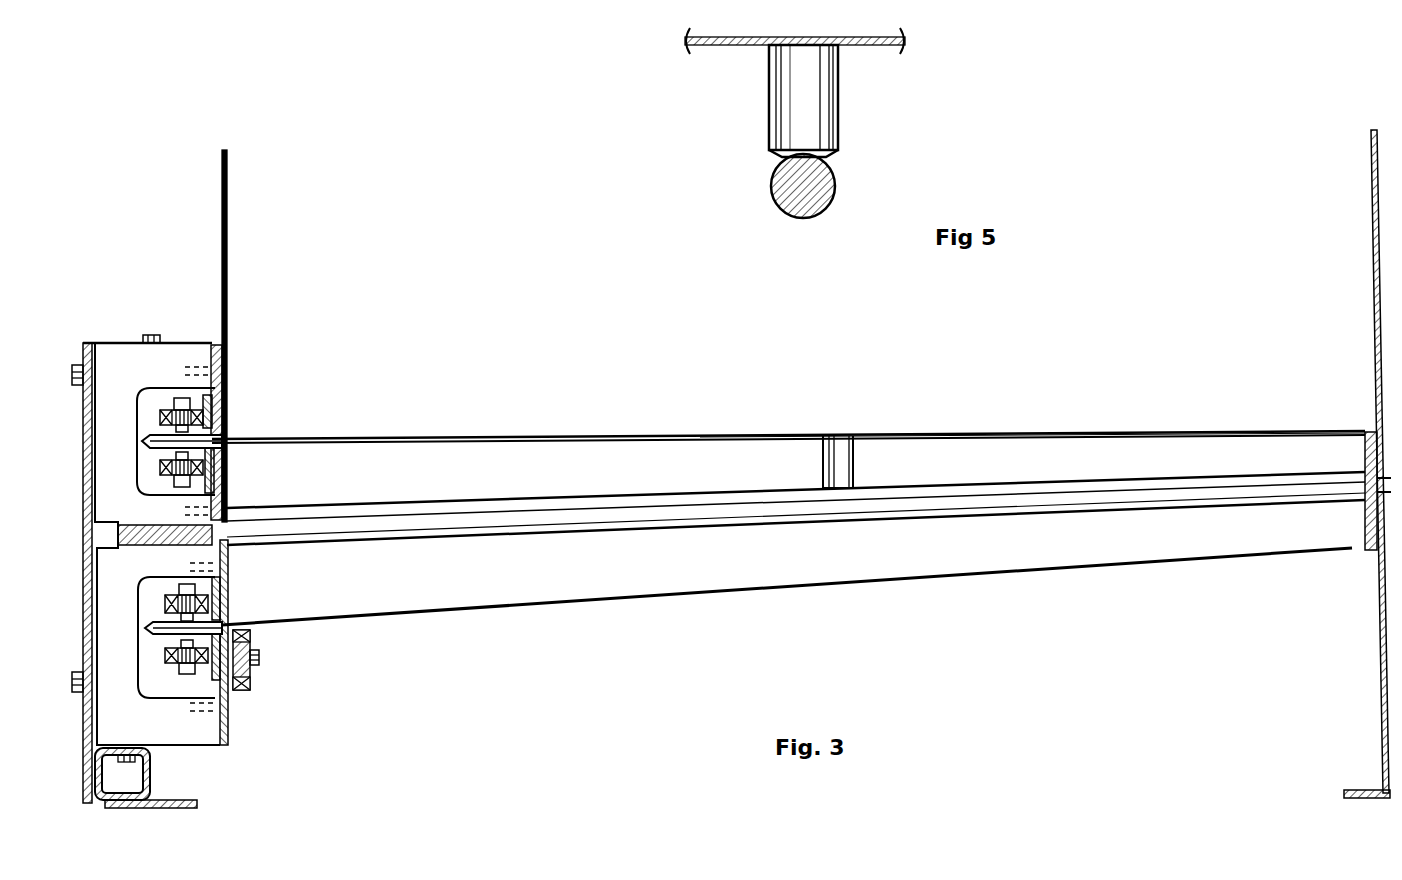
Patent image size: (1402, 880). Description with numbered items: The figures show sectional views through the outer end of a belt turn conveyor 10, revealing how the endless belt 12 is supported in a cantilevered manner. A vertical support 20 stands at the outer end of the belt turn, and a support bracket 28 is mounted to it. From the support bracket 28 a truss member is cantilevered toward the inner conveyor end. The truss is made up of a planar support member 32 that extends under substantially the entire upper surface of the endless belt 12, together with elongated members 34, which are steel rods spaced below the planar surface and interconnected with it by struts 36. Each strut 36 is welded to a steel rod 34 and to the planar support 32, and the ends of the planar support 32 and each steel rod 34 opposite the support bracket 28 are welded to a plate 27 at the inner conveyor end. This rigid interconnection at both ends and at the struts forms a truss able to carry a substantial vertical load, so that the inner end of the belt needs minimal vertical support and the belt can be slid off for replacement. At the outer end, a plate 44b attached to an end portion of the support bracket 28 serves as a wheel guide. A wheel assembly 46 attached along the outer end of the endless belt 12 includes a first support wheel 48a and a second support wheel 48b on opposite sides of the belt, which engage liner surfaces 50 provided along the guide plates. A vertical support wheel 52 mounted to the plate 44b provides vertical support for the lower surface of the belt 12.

In FIG. 3, the belt turn conveyor 10 is at (1372, 296).
In FIG. 3, the endless belt 12 is at (733, 434).
In FIG. 3, the vertical support 20 is at (140, 808).
In FIG. 3, the plate 27 is at (1365, 520).
In FIG. 3, the support bracket 28 is at (103, 342).
In FIG. 5, the planar support member 32 is at (746, 46).
In FIG. 3, the planar support member 32 is at (1062, 432).
In FIG. 5, the elongated members 34 is at (770, 175).
In FIG. 3, the elongated members 34 is at (883, 515).
In FIG. 5, the struts 36 is at (838, 100).
In FIG. 3, the struts 36 is at (855, 446).
In FIG. 3, the plate 44b is at (230, 728).
In FIG. 3, the wheel assembly 46 is at (222, 440).
In FIG. 3, the first support wheel 48a is at (222, 405).
In FIG. 3, the second support wheel 48b is at (222, 468).
In FIG. 3, the liner surfaces 50 is at (223, 400).
In FIG. 3, the vertical support wheel 52 is at (252, 640).